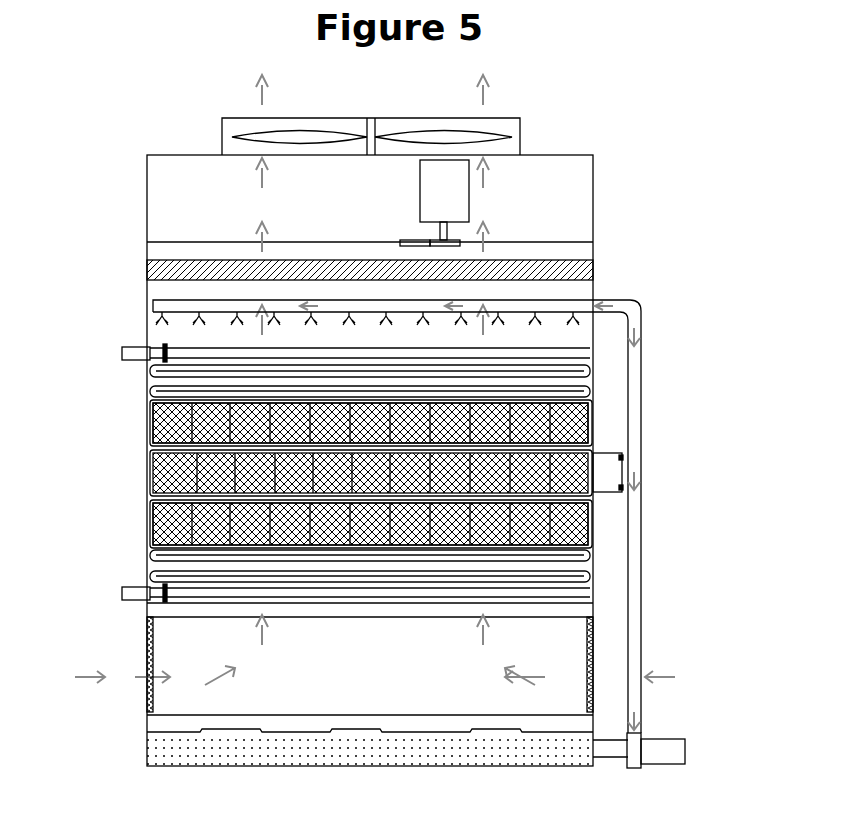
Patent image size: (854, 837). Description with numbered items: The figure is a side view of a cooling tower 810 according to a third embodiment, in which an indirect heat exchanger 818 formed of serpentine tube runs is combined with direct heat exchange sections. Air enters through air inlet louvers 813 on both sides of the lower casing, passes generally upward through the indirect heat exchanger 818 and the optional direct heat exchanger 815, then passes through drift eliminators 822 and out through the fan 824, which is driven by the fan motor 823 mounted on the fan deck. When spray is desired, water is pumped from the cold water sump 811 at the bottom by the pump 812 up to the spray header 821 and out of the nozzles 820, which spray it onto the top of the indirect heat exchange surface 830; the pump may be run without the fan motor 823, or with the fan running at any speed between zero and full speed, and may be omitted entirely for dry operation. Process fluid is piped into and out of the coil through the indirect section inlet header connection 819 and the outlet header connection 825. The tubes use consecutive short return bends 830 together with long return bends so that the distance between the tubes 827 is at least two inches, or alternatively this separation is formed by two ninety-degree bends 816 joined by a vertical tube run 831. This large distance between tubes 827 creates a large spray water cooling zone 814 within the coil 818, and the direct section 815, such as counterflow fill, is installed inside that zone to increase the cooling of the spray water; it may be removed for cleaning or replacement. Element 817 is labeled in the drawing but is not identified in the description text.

The cooling tower 810 is at (136, 151).
The cold water sump 811 is at (146, 750).
The pump 812 is at (685, 745).
The air inlet louvers 813 is at (147, 640).
The large spray water cooling zone 814 is at (150, 527).
The direct heat exchanger 815 is at (150, 518).
The 90 degree bends 816 is at (150, 440).
The fill pack frame 817 is at (590, 403).
The indirect heat exchanger 818 is at (590, 395).
The indirect section inlet header connection 819 is at (122, 349).
The nozzles 820 is at (150, 311).
The spray header 821 is at (591, 300).
The drift eliminators 822 is at (560, 261).
The fan motor 823 is at (470, 193).
The fan 824 is at (232, 137).
The indirect section outlet header connection 825 is at (122, 588).
The distance between the tubes 827 is at (622, 470).
The short return bends 830 is at (590, 558).
The vertical tube run 831 is at (152, 468).